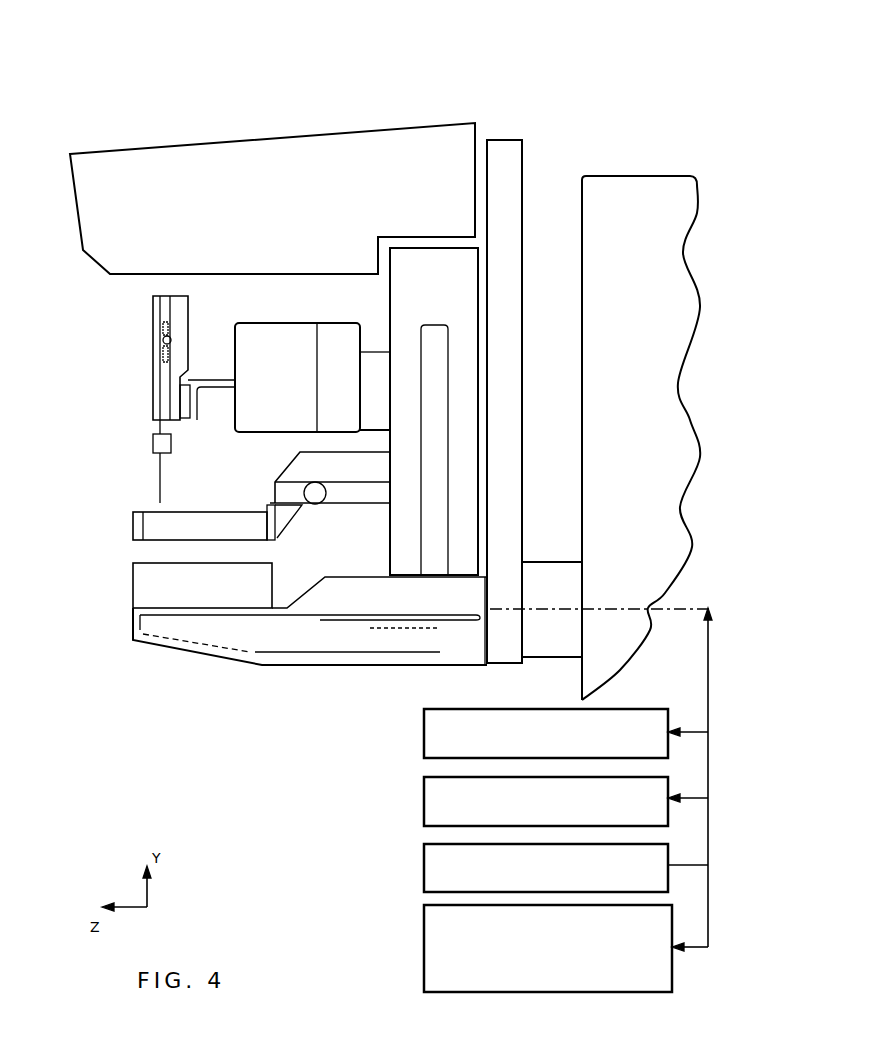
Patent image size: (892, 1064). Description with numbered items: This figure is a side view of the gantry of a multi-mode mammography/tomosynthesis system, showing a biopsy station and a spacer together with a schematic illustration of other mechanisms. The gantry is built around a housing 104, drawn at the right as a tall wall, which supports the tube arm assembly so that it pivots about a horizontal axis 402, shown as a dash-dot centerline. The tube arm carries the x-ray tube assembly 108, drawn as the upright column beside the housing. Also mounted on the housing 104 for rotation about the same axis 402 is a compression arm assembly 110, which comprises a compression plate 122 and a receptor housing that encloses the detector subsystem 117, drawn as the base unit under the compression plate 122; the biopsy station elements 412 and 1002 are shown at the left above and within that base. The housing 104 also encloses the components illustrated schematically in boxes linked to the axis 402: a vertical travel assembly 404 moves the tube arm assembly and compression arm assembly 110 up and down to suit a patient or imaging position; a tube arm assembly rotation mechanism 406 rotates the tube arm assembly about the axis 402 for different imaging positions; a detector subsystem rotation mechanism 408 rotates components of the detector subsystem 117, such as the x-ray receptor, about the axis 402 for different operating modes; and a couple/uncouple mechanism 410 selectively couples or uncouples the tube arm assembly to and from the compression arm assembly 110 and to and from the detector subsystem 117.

The housing 104 is at (650, 183).
The x-ray tube assembly 108 is at (516, 158).
The compression arm assembly 110 is at (463, 272).
The detector subsystem 117 is at (263, 641).
The detector housing block 1002 is at (128, 588).
The compression plate 122 is at (133, 522).
The compression paddle assembly 412 is at (128, 298).
The horizontal axis 402 is at (628, 608).
The vertical travel assembly 404 is at (424, 724).
The tube arm assembly rotation mechanism 406 is at (424, 787).
The detector subsystem rotation mechanism 408 is at (424, 862).
The couple/uncouple mechanism 410 is at (430, 945).